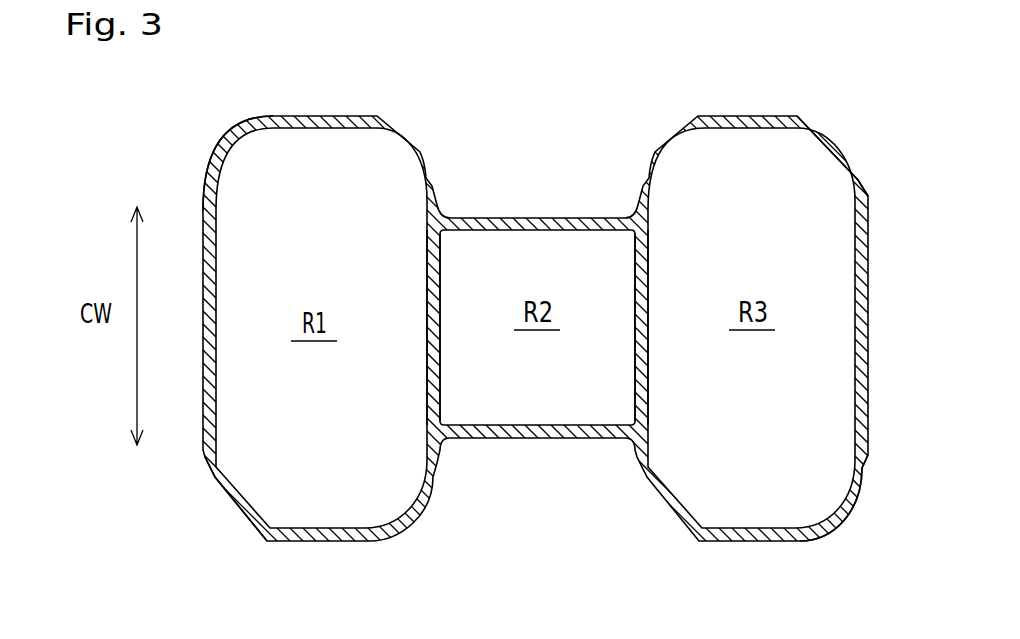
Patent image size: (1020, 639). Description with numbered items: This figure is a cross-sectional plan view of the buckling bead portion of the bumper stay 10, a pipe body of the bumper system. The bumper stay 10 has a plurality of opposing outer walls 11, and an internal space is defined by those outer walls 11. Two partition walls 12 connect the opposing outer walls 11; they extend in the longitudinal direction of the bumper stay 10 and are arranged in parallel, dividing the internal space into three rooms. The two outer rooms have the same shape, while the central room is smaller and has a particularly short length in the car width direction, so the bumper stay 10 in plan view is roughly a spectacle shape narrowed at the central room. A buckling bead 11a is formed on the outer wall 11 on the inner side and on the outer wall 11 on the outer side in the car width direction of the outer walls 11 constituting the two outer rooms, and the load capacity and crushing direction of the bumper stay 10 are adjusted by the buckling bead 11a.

The bumper stay 10 is at (510, 308).
The outer wall 11 is at (204, 207).
The buckling bead 11a is at (273, 116).
The partition wall 12 is at (437, 398).